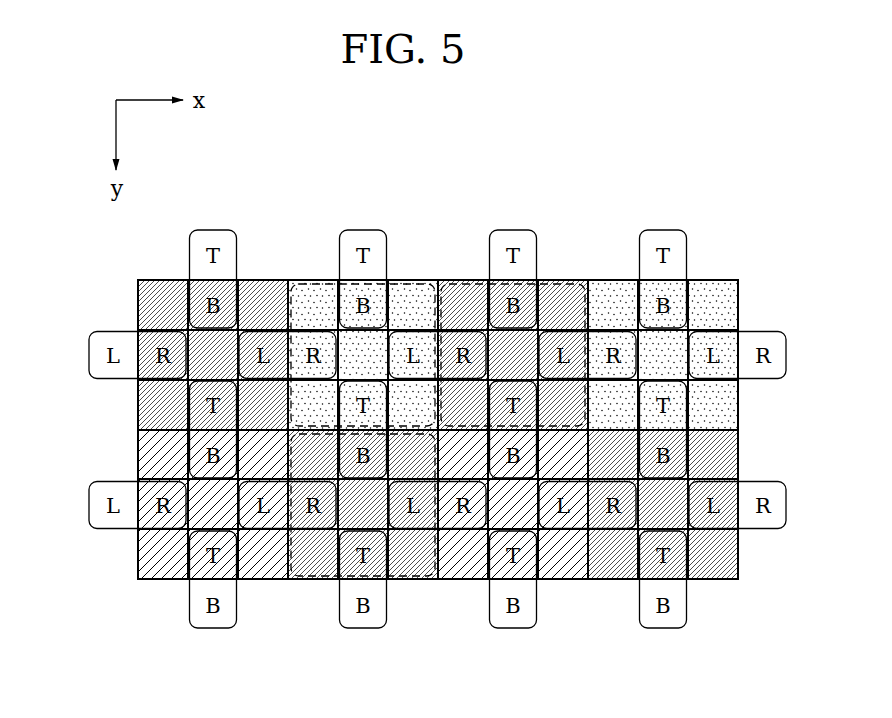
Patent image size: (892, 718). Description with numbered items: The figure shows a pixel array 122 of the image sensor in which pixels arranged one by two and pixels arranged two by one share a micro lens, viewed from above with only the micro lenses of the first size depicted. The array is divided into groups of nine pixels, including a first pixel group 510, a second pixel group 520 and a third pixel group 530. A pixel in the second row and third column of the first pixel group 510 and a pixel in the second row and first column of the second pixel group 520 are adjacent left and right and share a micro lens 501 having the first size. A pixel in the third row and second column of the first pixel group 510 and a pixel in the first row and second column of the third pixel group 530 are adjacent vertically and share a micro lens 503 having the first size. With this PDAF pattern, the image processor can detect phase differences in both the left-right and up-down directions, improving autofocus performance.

The pixel array 122 is at (706, 196).
The micro lens having a first size 501 is at (408, 331).
The micro lens having a first size 503 is at (340, 410).
The first pixel group 510 is at (320, 285).
The second pixel group 520 is at (555, 284).
The third pixel group 530 is at (308, 579).